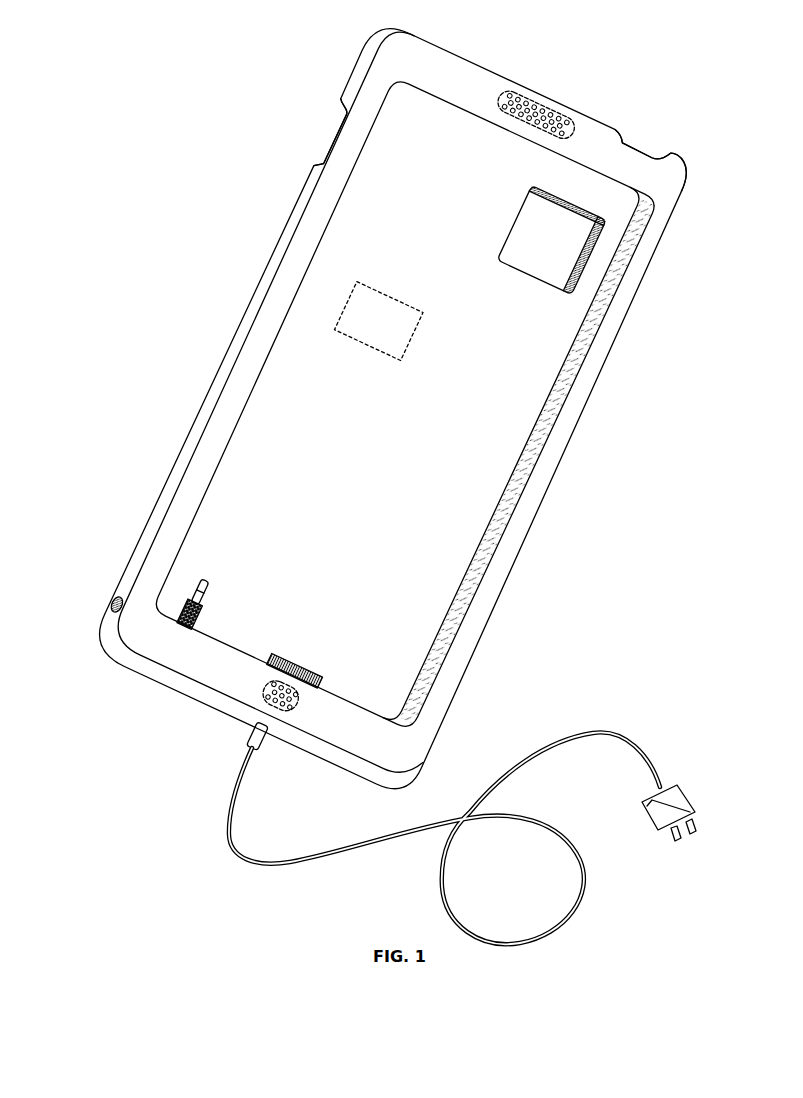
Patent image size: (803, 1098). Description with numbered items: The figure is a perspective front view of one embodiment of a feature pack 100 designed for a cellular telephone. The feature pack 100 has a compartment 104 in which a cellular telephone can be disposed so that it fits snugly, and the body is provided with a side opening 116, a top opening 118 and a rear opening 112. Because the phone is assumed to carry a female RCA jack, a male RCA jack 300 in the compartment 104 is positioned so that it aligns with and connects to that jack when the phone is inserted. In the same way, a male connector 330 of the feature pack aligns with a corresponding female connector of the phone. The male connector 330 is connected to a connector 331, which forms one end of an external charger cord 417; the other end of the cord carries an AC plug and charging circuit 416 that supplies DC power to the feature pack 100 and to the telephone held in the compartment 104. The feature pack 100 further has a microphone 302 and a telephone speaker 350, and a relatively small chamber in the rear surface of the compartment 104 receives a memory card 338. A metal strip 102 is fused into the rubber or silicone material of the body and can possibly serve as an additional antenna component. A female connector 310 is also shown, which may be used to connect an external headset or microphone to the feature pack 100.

The feature pack 100 is at (418, 37).
The metal strip 102 is at (527, 470).
The compartment 104 is at (333, 485).
The rear opening 112 is at (543, 268).
The side opening 116 is at (332, 140).
The top opening 118 is at (636, 150).
The male RCA jack 300 is at (187, 595).
The microphone 302 is at (262, 705).
The female connector 310 is at (113, 603).
The male connector 330 is at (318, 683).
The connector 331 is at (270, 745).
The memory card 338 is at (347, 305).
The telephone speaker 350 is at (530, 95).
The AC plug and charging circuit 416 is at (688, 790).
The external charger cord 417 is at (317, 861).